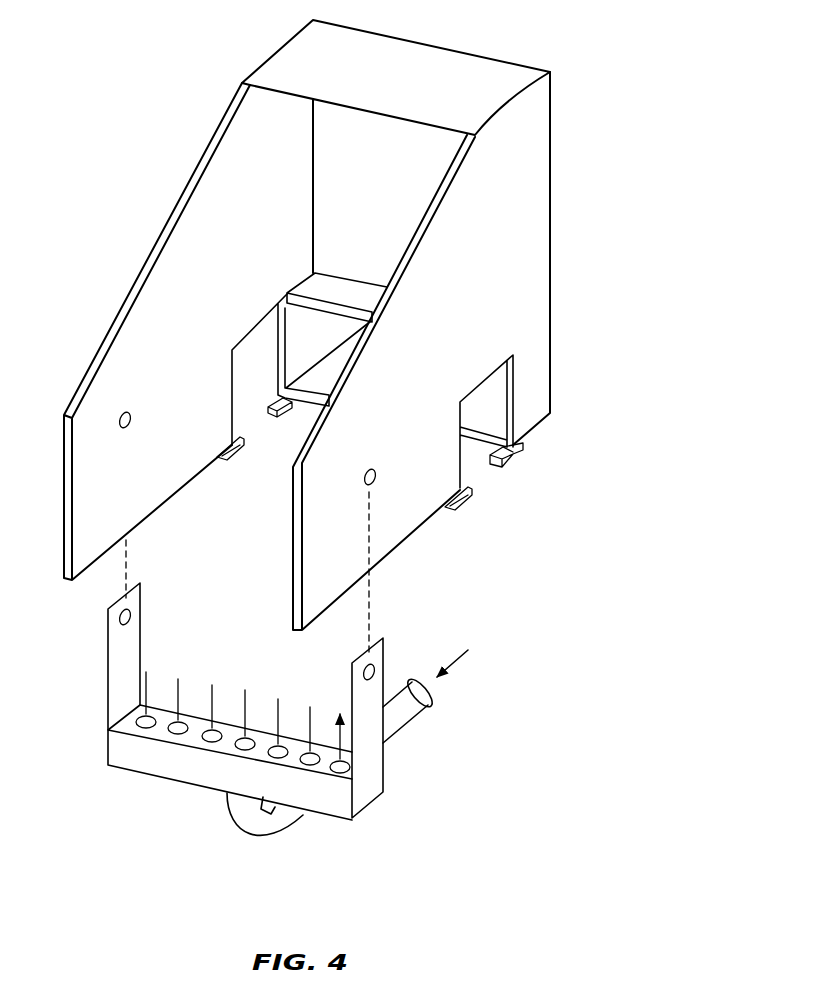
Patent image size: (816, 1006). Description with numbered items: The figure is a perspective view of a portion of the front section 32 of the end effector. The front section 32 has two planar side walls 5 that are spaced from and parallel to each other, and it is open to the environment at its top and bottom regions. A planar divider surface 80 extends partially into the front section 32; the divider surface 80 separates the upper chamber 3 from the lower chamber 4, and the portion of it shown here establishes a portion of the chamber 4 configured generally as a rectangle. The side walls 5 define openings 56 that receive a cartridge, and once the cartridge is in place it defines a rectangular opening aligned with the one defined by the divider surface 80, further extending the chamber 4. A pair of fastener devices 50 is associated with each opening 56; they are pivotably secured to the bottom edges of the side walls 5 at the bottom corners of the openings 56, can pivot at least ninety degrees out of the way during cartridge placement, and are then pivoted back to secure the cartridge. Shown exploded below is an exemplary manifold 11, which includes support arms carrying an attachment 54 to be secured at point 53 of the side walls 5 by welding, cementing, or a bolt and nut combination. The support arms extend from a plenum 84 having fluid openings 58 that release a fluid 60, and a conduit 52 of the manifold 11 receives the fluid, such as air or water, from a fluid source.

The upper chamber 3 is at (337, 325).
The lower chamber 4 is at (379, 409).
The side walls 5 is at (249, 145).
The manifold 11 is at (274, 677).
The front section 32 is at (337, 325).
The fastener devices 50 is at (290, 418).
The conduit 52 is at (403, 717).
The point 53 is at (378, 477).
The attachment 54 is at (124, 620).
The openings 56 is at (481, 418).
The fluid openings 58 is at (338, 774).
The fluid 60 is at (212, 699).
The divider surface 80 is at (316, 294).
The plenum 84 is at (203, 770).